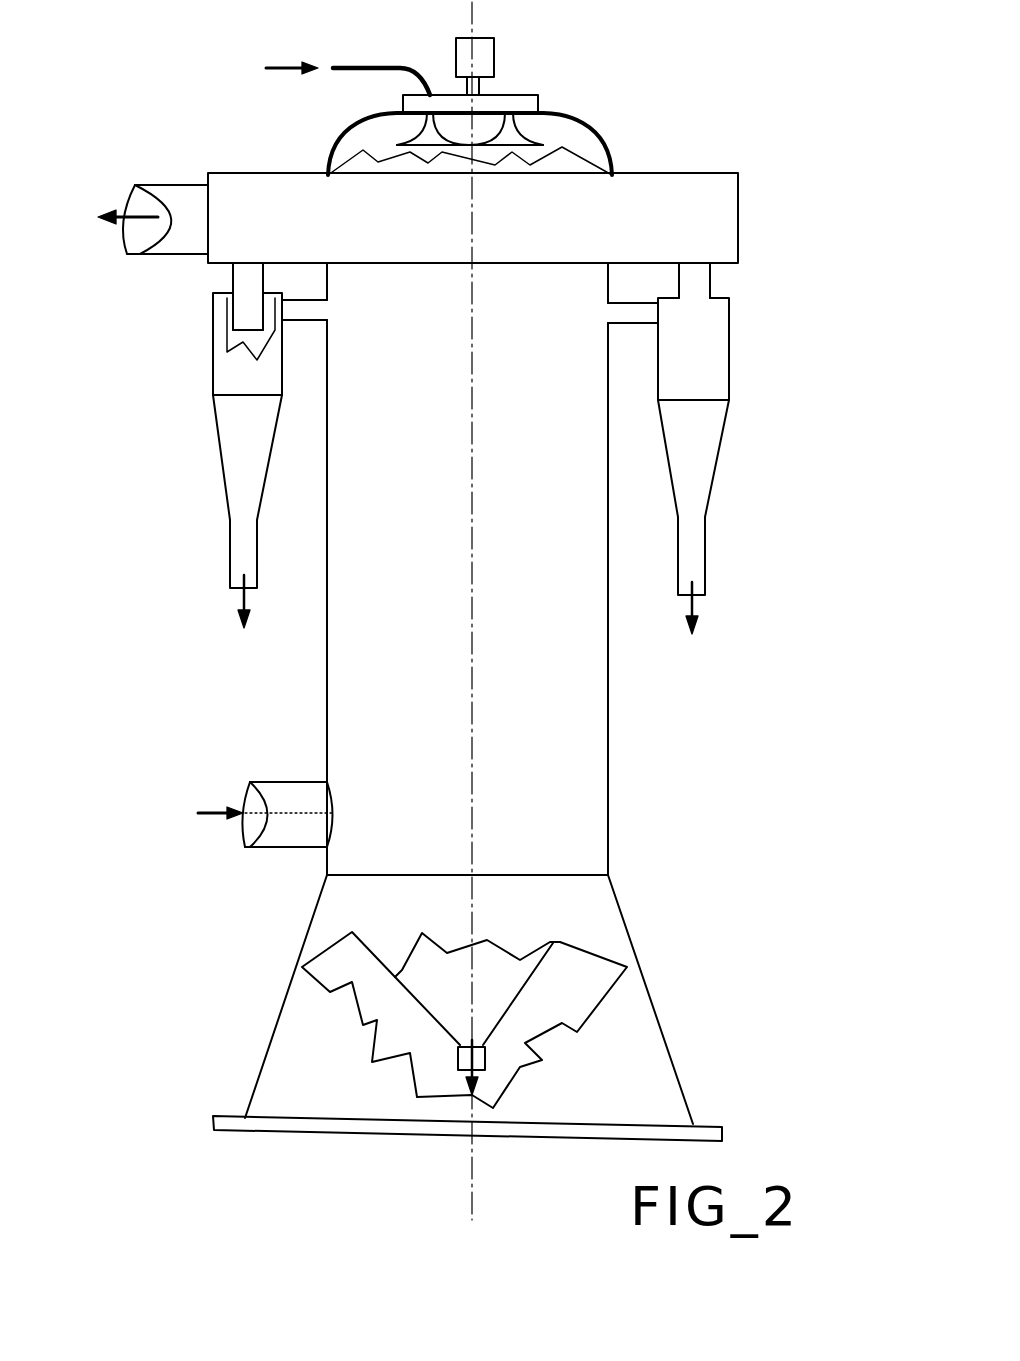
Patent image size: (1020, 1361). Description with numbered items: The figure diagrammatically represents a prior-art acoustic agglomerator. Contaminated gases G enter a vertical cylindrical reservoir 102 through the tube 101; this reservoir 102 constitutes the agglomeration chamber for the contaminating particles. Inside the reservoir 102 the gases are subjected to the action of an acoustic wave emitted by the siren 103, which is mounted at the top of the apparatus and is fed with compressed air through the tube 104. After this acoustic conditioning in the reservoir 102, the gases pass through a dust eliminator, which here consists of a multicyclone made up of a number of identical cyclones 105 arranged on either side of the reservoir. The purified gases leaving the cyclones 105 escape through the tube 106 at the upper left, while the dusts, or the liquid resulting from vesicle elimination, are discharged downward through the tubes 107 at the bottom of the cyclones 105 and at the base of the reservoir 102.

The tube 101 is at (268, 795).
The vertical cylindrical reservoir 102 is at (612, 742).
The siren 103 is at (520, 100).
The tube 104 is at (352, 78).
The cyclones 105 is at (218, 357).
The tube 106 is at (183, 218).
The tubes 107 is at (245, 556).